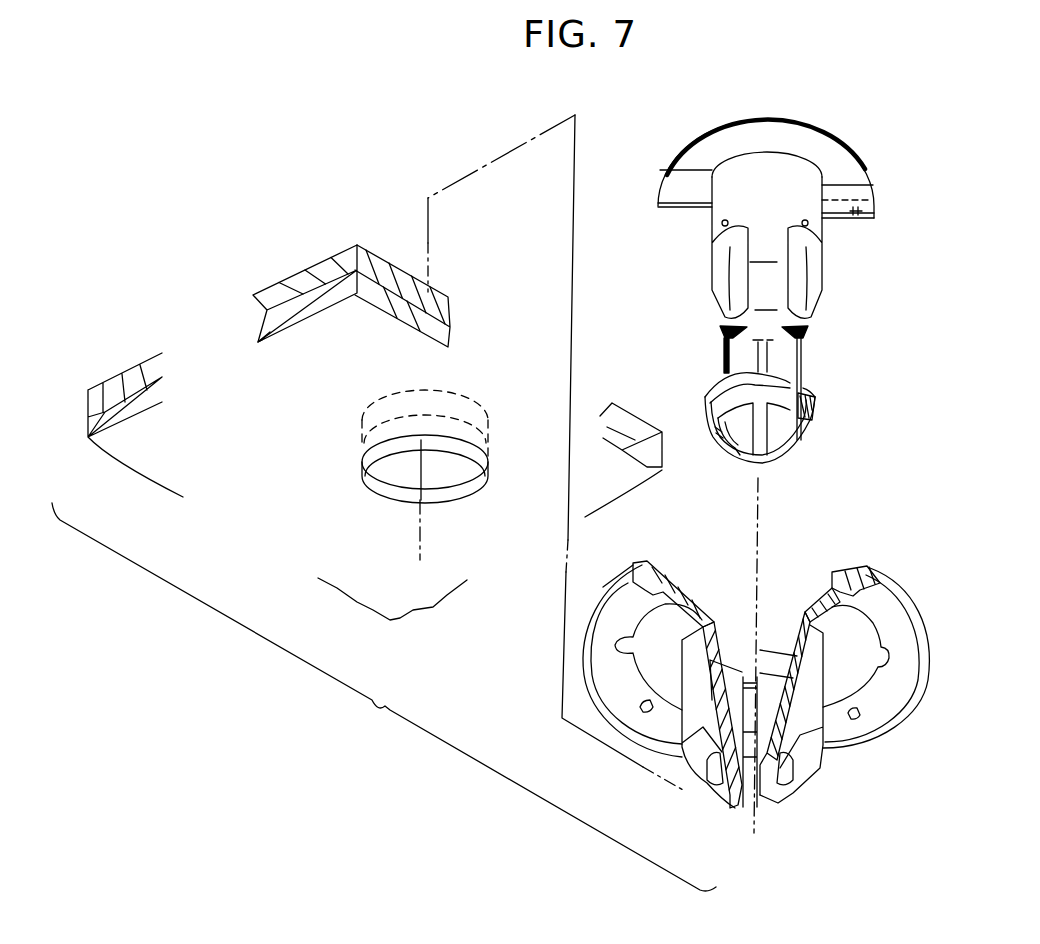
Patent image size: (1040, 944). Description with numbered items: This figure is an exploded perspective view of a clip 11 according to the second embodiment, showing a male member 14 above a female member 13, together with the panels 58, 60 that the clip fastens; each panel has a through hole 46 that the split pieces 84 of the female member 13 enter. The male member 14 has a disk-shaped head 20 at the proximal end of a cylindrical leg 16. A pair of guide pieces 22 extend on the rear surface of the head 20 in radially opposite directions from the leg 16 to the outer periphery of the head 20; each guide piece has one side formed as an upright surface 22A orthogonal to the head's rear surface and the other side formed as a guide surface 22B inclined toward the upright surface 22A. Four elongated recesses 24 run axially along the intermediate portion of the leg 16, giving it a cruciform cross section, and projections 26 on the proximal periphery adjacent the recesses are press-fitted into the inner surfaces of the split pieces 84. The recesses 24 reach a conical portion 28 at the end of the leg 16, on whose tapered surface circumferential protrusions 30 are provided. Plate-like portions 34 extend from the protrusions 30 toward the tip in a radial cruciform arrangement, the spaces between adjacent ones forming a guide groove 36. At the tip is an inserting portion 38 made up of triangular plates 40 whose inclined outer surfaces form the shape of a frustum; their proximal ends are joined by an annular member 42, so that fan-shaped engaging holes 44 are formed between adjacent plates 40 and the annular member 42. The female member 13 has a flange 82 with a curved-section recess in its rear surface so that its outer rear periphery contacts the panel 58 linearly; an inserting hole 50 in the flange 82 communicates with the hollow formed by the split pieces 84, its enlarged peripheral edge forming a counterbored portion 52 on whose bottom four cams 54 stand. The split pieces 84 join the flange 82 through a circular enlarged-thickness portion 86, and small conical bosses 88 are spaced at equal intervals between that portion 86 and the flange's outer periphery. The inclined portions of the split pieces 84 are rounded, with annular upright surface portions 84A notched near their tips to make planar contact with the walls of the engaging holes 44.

The clip 11 is at (940, 290).
The female member 13 is at (912, 568).
The male member 14 is at (896, 160).
The cylindrical leg 16 is at (684, 300).
The disk-shaped head 20 is at (833, 148).
The guide pieces 22 is at (668, 188).
The upright surface 22A is at (857, 213).
The guide surface 22B is at (690, 180).
The elongated recesses 24 is at (730, 270).
The projections 26 is at (725, 223).
The conical portion 28 is at (760, 320).
The protrusions 30 is at (720, 330).
The plate-like portions 34 is at (727, 357).
The guide groove 36 is at (807, 365).
The inserting portion 38 is at (770, 454).
The triangular plates 40 is at (735, 447).
The annular member 42 is at (705, 388).
The engaging holes 44 is at (733, 428).
The through holes 46 is at (390, 488).
The inserting hole 50 is at (803, 613).
The counterbored portion 52 is at (685, 582).
The cams 54 is at (727, 660).
The panel 58 is at (302, 283).
The panel 60 is at (297, 315).
The flange 82 is at (900, 640).
The split pieces 84 is at (693, 663).
The annular upright surface portions 84A is at (717, 763).
The enlarged-thickness portion 86 is at (917, 607).
The conical bosses 88 is at (645, 707).